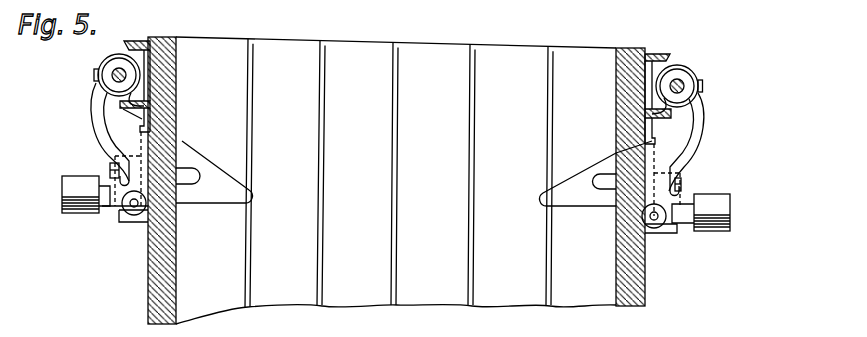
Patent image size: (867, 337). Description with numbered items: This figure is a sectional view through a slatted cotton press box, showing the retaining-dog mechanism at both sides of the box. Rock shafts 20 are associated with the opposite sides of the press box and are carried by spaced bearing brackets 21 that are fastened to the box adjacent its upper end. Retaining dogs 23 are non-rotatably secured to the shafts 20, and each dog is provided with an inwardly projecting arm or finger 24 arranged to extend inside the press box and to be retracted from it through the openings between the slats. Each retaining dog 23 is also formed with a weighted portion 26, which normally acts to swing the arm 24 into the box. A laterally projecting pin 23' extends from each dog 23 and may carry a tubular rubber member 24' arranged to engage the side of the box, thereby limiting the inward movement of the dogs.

The rock shaft 20 is at (117, 74).
The bearing bracket 21 is at (143, 128).
The retaining dog 23 is at (397, 139).
The arm or finger 24 is at (414, 177).
The tubular rubber member 24' is at (399, 208).
The laterally projecting pin 23' is at (391, 225).
The weighted portion 26 is at (60, 185).